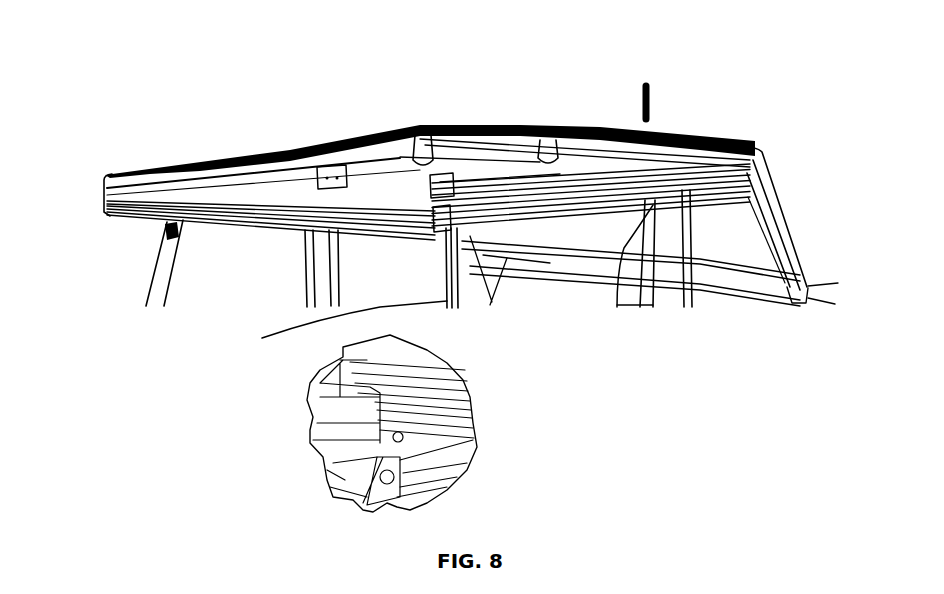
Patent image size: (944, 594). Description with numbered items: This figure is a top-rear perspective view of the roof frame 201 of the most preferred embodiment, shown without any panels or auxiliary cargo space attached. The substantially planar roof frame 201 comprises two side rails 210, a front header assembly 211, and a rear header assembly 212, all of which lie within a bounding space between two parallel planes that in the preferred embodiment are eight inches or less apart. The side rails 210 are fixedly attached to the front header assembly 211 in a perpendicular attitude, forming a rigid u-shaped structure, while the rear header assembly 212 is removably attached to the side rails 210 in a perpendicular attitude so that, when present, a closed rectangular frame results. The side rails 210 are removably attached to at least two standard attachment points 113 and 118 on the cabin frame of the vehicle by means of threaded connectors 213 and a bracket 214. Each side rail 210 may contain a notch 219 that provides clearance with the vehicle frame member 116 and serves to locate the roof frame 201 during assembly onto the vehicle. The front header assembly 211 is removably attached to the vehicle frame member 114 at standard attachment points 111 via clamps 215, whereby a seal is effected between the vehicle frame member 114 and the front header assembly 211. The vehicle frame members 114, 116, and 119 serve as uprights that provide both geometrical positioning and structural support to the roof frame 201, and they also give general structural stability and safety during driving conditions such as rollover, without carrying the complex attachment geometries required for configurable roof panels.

The roof frame 201 is at (147, 155).
The side rails 210 is at (345, 140).
The front header assembly 211 is at (476, 118).
The rear header assembly 212 is at (190, 192).
The clamps 215 is at (527, 159).
The standard attachment points 111 is at (633, 158).
The threaded connectors 213 is at (658, 103).
The vehicle frame member 114 is at (742, 183).
The standard attachment point 113 is at (604, 299).
The standard attachment point 118 is at (470, 222).
The vehicle frame member 119 is at (168, 274).
The vehicle frame member 116 is at (667, 245).
The notch 219 is at (667, 188).
The bracket 214 is at (393, 463).